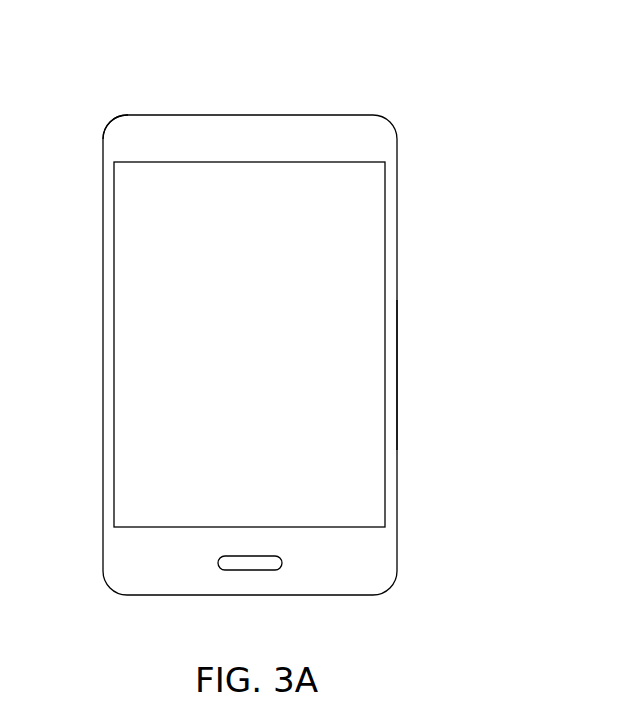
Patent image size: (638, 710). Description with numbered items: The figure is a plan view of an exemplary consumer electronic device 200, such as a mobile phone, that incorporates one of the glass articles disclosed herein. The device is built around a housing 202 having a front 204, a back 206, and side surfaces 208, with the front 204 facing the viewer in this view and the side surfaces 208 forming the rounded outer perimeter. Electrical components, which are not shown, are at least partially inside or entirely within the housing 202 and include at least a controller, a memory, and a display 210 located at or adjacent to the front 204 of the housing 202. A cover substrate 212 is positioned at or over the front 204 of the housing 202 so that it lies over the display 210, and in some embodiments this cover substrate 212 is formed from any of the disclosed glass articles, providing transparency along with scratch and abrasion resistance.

The consumer electronic device 200 is at (333, 306).
The housing 202 is at (112, 153).
The front surface 204 is at (374, 568).
The back surface 206 is at (157, 298).
The side surfaces 208 is at (400, 386).
The display 210 is at (423, 268).
The cover substrate 212 is at (155, 417).